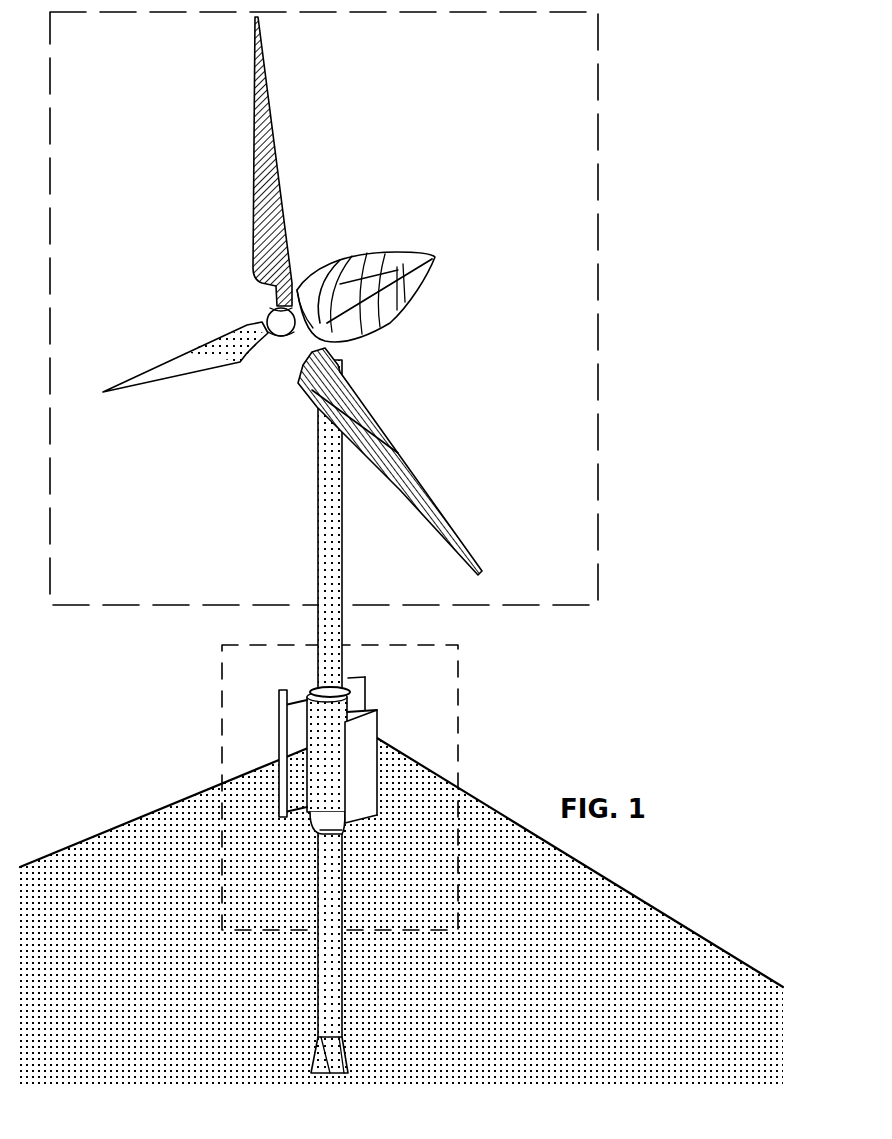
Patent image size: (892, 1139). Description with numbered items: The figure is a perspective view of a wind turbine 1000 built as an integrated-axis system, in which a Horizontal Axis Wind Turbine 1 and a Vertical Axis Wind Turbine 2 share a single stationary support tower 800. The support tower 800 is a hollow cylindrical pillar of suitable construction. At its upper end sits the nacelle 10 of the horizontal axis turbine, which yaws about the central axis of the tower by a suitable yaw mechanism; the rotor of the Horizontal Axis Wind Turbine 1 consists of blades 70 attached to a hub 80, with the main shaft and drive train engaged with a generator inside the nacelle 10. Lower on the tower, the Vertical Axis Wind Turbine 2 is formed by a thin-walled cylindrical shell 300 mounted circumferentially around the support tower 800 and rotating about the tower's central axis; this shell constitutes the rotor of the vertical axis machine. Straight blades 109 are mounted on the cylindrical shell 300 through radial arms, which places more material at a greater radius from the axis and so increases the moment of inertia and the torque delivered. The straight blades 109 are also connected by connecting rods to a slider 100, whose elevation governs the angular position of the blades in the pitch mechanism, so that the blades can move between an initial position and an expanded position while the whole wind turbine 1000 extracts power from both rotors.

The wind turbine 1000 is at (401, 550).
The Horizontal Axis Wind Turbine 1 is at (598, 178).
The Vertical Axis Wind Turbine 2 is at (462, 742).
The blades 70 is at (280, 245).
The hub 80 is at (277, 322).
The nacelle 10 is at (437, 267).
The support tower 800 is at (361, 716).
The cylindrical shell 300 is at (347, 706).
The straight blades 109 is at (362, 742).
The slider 100 is at (343, 835).